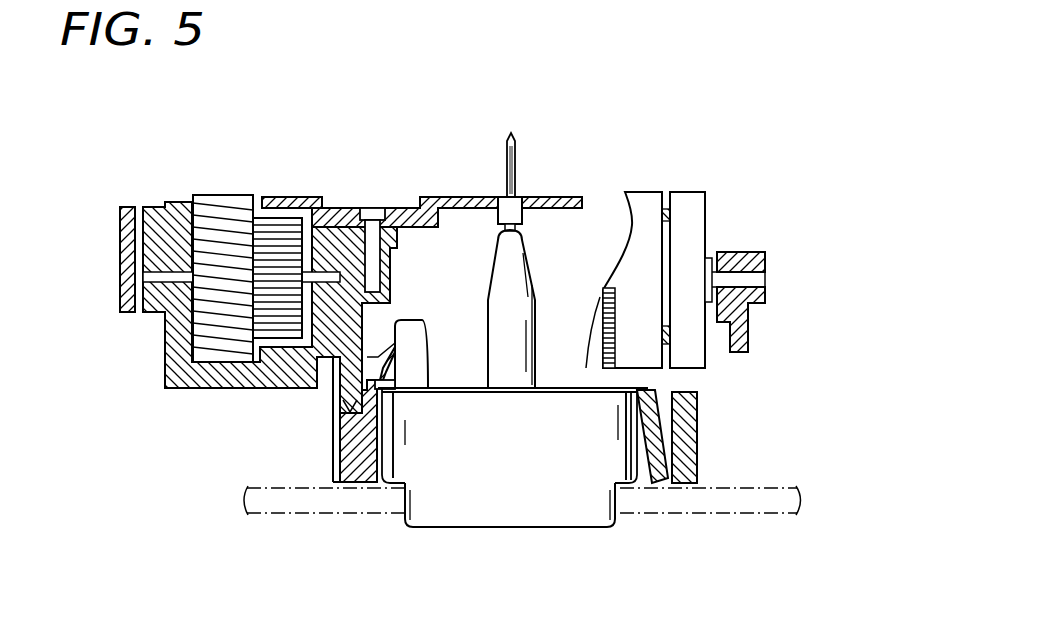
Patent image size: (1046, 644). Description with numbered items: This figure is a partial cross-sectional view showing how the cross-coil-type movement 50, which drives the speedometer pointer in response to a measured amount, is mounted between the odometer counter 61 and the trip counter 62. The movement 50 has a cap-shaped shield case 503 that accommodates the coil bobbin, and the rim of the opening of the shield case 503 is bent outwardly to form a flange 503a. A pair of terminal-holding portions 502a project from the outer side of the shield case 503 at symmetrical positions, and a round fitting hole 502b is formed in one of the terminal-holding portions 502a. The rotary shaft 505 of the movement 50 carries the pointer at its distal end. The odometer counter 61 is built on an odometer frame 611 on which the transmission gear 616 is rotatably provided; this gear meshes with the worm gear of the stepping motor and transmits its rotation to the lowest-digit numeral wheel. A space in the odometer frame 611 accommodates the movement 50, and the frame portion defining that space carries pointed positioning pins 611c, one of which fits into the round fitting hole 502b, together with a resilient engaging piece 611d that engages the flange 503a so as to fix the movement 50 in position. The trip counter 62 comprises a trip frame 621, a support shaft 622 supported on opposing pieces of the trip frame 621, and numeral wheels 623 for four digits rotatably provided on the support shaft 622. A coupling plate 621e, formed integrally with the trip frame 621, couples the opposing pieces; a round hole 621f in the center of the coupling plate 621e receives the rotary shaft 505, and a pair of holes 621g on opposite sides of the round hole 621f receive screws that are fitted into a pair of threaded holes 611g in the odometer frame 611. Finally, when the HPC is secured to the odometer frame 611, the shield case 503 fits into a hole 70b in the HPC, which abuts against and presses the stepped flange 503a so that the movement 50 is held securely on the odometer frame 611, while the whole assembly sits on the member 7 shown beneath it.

The guide rail 7 is at (708, 503).
The cross-coil-type movement 50 is at (560, 537).
The odometer counter 61 is at (267, 433).
The trip counter 62 is at (718, 210).
The hole 70b is at (403, 513).
The terminal-holding portions 502a is at (357, 483).
The round fitting hole 502b is at (343, 400).
The shield case 503 is at (515, 470).
The flange 503a is at (452, 392).
The rotary shaft 505 is at (515, 152).
The odometer frame 611 is at (278, 390).
The positioning pins 611c is at (327, 400).
The resilient engaging piece 611d is at (655, 428).
The threaded holes 611g is at (317, 197).
The transmission gear 616 is at (217, 195).
The trip frame 621 is at (740, 315).
The coupling plate 621e is at (437, 197).
The round hole 621f is at (483, 198).
The holes 621g is at (372, 207).
The support shaft 622 is at (760, 278).
The numeral wheels 623 is at (645, 203).